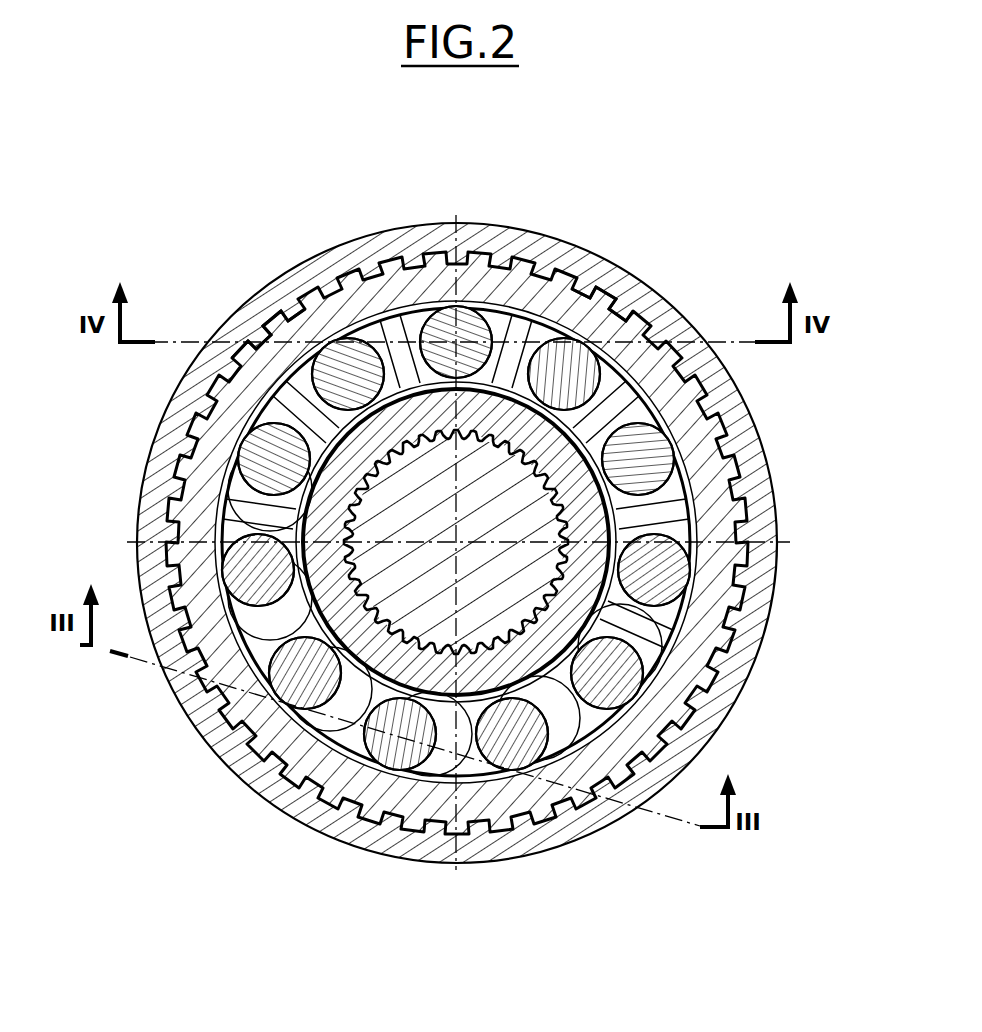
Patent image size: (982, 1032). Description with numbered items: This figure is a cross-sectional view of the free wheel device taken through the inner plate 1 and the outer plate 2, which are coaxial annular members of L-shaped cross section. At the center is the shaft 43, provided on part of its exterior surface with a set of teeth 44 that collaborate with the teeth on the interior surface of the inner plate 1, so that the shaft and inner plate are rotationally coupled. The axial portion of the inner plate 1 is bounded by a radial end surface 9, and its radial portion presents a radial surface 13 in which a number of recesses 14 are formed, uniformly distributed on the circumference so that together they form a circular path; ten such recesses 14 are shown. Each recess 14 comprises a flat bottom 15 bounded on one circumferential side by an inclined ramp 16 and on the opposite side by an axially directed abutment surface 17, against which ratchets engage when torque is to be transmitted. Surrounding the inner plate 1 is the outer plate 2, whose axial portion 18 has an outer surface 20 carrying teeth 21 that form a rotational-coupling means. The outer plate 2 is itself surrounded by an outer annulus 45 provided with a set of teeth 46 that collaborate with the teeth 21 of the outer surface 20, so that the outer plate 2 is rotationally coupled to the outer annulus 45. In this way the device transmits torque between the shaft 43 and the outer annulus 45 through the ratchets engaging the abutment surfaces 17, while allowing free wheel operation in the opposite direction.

The inner plate 1 is at (227, 457).
The outer plate 2 is at (355, 307).
The radial end surface 9 is at (400, 513).
The radial surface 13 is at (519, 305).
The recesses 14 is at (337, 723).
The flat bottom 15 is at (673, 486).
The inclined ramp 16 is at (573, 763).
The abutment surface 17 is at (465, 765).
The axial portion 18 is at (645, 322).
The outer surface 20 is at (600, 305).
The teeth 21 is at (562, 298).
The shaft 43 is at (262, 322).
The set of teeth 44 is at (365, 525).
The outer annulus 45 is at (358, 255).
The set of teeth 46 is at (415, 252).